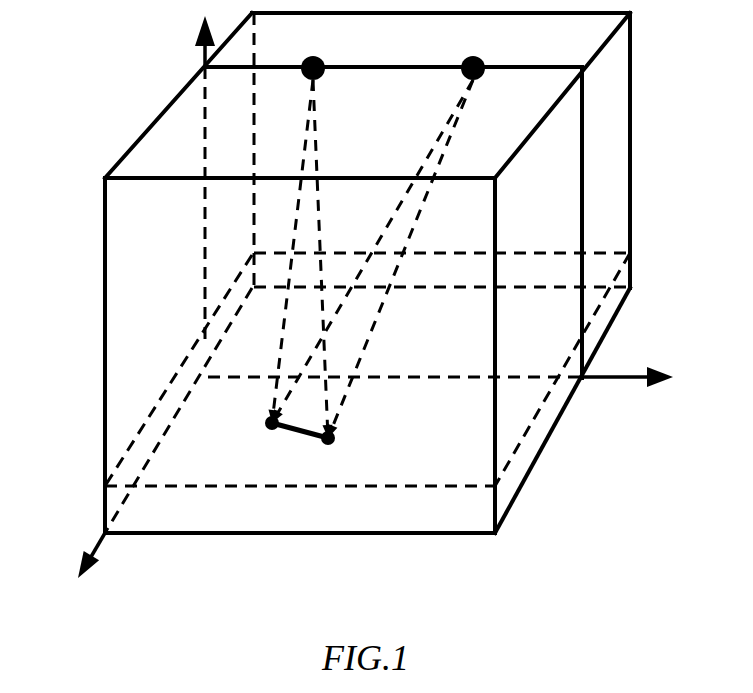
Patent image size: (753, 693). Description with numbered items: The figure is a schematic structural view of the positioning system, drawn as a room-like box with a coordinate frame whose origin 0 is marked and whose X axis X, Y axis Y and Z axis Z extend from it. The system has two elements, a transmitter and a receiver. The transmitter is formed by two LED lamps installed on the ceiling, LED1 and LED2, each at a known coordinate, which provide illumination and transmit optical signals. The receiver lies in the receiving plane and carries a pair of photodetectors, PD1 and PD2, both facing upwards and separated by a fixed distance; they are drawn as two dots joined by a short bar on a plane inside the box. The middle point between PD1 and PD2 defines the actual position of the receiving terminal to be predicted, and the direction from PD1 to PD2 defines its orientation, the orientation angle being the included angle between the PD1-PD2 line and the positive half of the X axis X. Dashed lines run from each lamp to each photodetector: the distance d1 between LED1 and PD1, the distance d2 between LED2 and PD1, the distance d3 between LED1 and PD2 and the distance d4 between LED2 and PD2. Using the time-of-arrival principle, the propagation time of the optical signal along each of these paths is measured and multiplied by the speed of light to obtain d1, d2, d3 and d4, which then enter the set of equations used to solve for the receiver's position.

The LED lamp LED1 is at (313, 50).
The LED lamp LED2 is at (487, 49).
The photodetector PD1 is at (224, 431).
The photodetector PD2 is at (380, 444).
The distance between LED1 and PD1 d1 is at (288, 251).
The distance between LED2 and PD1 d2 is at (372, 251).
The distance between LED1 and PD2 d3 is at (341, 259).
The distance between LED2 and PD2 d4 is at (412, 259).
The X axis X is at (76, 546).
The Y axis Y is at (441, 353).
The Z axis Z is at (186, 173).
The coordinate origin 0 is at (194, 367).